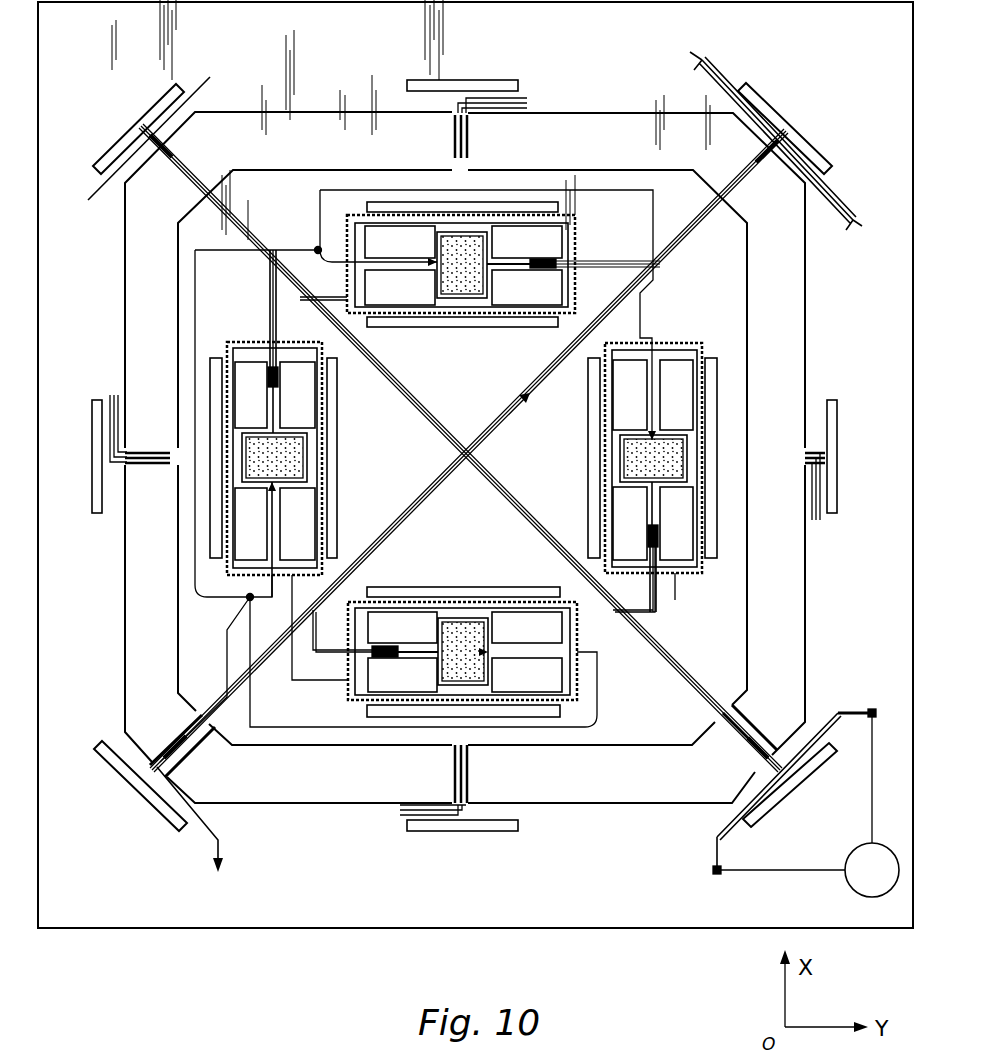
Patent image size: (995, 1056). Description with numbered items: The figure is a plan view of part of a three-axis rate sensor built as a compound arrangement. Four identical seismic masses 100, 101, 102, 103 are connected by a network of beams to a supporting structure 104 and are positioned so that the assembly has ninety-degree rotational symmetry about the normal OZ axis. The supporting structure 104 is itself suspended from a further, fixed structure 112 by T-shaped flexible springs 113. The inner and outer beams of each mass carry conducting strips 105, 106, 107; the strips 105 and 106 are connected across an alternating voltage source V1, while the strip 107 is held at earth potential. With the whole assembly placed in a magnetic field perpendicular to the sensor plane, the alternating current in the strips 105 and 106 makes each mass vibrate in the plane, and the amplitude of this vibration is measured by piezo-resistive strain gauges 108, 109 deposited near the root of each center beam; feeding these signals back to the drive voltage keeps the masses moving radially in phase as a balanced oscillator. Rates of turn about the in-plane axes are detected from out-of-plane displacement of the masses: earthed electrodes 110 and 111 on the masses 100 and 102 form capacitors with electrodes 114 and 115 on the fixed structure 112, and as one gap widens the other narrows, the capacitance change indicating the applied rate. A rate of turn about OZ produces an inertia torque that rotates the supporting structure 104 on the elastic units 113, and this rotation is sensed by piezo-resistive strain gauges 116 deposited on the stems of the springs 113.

The seismic mass 100 is at (503, 269).
The seismic mass 101 is at (673, 490).
The seismic mass 102 is at (462, 616).
The seismic mass 103 is at (295, 490).
The supporting structure 104 is at (412, 463).
The conducting strip 105 is at (568, 213).
The conducting strip 106 is at (560, 310).
The conducting strip 107 is at (399, 262).
The piezo-resistive strain gauge 108 is at (533, 263).
The piezo-resistive strain gauge 109 is at (547, 247).
The earthed electrode 110 is at (452, 283).
The earthed electrode 111 is at (452, 618).
The fixed structure 112 is at (870, 323).
The T-shaped flexible spring 113 is at (482, 153).
The electrode 114 is at (465, 300).
The electrode 115 is at (473, 620).
The piezo-resistive strain gauge 116 is at (470, 138).
The alternating voltage source V1 is at (810, 806).